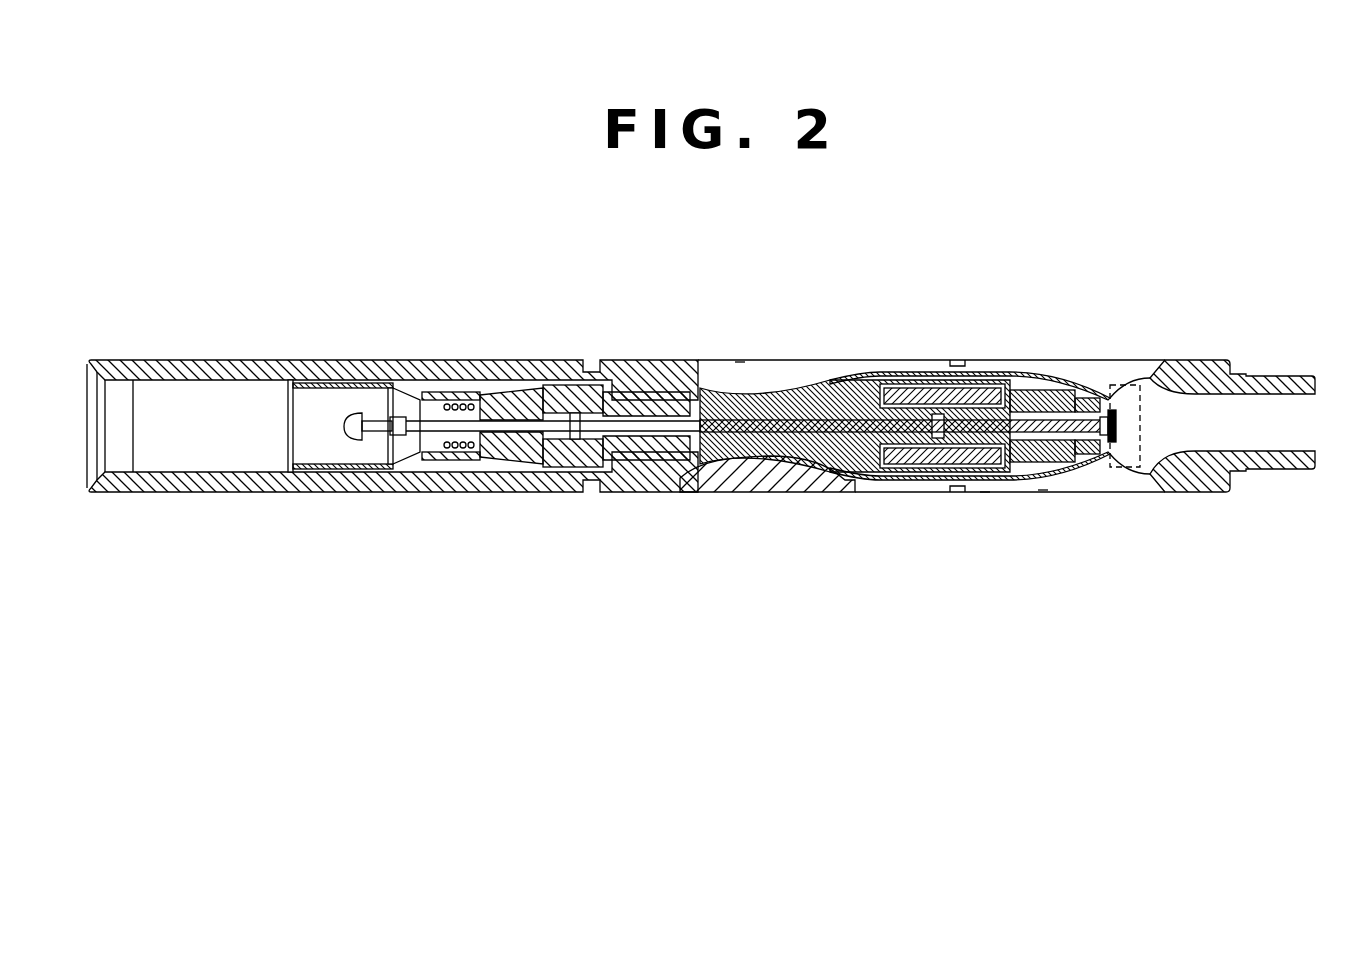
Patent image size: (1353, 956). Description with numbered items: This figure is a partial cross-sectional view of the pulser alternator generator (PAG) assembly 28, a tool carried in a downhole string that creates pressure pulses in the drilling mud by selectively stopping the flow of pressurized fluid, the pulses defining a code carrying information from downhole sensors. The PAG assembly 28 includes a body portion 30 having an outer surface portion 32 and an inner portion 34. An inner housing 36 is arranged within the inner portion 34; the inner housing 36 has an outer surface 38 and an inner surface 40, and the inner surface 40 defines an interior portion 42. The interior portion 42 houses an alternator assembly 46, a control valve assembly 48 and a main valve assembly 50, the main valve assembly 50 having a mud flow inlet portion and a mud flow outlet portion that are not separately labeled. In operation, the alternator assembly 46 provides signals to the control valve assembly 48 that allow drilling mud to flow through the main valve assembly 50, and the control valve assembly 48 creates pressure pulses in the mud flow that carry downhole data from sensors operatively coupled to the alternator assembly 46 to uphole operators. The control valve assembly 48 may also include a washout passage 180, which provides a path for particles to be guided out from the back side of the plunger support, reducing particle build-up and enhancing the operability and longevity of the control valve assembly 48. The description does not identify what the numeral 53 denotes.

The pulser alternator generator assembly 28 is at (1052, 592).
The body portion 30 is at (985, 505).
The outer surface portion 32 is at (812, 493).
The inner portion 34 is at (1160, 375).
The inner housing 36 is at (1043, 493).
The outer surface 38 is at (1083, 378).
The inner surface 40 is at (770, 382).
The interior portion 42 is at (635, 372).
The alternator assembly 46 is at (1123, 364).
The control valve assembly 48 is at (740, 362).
The main valve assembly 50 is at (408, 365).
The inner tube 53 is at (560, 372).
The washout passage 180 is at (995, 372).